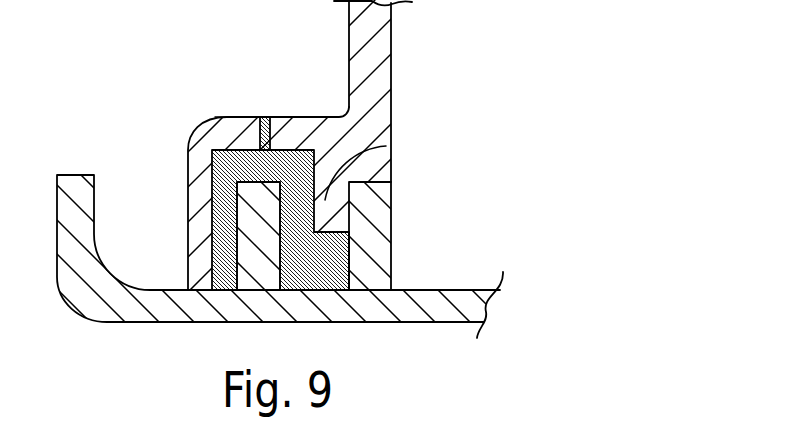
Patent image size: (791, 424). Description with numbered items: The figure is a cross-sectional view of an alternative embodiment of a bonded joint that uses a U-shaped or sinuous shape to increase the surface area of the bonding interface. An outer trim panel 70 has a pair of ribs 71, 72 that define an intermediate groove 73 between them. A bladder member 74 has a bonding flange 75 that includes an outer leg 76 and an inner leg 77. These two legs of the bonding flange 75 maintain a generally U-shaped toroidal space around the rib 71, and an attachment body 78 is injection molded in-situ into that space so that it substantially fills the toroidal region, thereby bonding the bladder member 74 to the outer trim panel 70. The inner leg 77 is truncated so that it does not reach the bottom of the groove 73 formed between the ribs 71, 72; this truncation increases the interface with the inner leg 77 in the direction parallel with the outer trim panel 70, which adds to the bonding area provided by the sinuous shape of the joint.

The outer trim panel 70 is at (170, 312).
The rib 71 is at (259, 271).
The rib 72 is at (382, 196).
The intermediate groove 73 is at (350, 260).
The bladder member 74 is at (378, 42).
The bonding flange 75 is at (238, 105).
The outer leg 76 is at (197, 203).
The inner leg 77 is at (386, 146).
The attachment body 78 is at (281, 163).